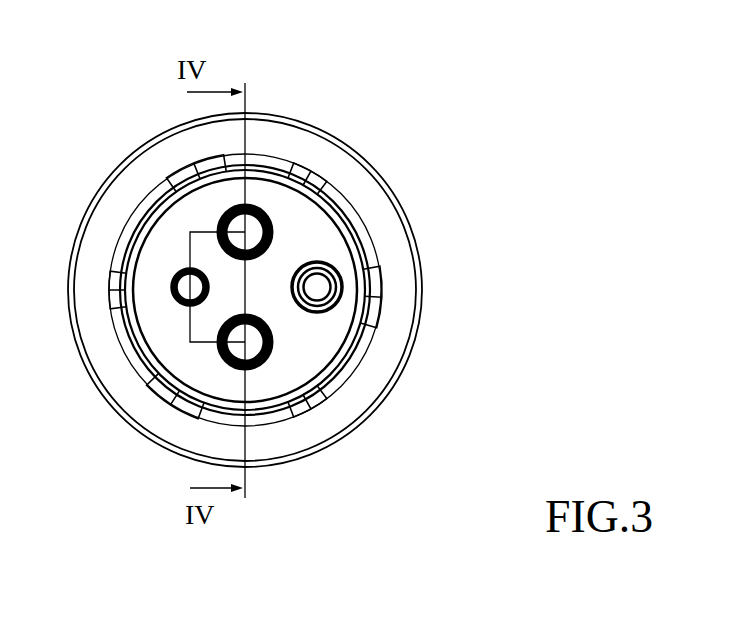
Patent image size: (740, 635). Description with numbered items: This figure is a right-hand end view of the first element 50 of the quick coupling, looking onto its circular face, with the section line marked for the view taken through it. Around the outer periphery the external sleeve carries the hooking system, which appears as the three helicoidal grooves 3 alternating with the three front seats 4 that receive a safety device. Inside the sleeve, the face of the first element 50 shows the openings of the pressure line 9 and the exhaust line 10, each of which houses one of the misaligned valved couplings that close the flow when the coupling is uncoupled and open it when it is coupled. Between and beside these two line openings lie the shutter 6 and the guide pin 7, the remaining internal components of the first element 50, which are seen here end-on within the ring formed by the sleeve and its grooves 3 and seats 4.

The helicoidal groove 3 is at (112, 283).
The front seat 4 is at (203, 168).
The shutter 6 is at (183, 289).
The guide pin 7 is at (320, 290).
The pressure line 9 is at (252, 236).
The exhaust line 10 is at (250, 345).
The first element 50 is at (126, 503).